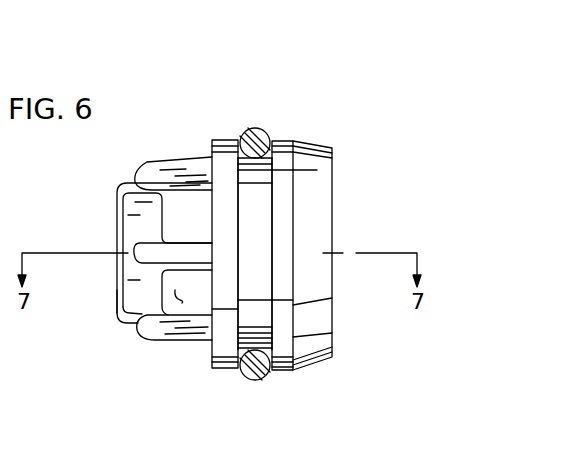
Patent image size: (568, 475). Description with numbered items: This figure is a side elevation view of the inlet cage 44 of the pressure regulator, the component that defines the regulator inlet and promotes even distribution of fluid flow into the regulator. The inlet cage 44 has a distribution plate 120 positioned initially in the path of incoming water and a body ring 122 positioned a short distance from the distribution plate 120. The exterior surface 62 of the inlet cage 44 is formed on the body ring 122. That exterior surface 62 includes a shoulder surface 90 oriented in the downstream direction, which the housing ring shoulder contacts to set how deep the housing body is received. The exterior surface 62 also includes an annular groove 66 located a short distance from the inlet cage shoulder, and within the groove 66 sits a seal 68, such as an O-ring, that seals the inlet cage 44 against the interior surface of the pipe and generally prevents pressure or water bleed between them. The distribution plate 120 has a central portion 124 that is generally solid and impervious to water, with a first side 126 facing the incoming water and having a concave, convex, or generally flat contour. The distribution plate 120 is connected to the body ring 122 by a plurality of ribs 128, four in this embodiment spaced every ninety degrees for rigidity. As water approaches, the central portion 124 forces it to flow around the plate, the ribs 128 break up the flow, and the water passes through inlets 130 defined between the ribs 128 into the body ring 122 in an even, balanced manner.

The inlet cage 44 is at (229, 109).
The exterior surface 62 is at (284, 372).
The annular groove 66 is at (274, 125).
The seal 68 is at (258, 129).
The shoulder surface 90 is at (333, 170).
The distribution plate 120 is at (115, 202).
The body ring 122 is at (259, 397).
The central portion 124 is at (130, 228).
The first side 126 is at (117, 297).
The ribs 128 is at (185, 339).
The inlets 130 is at (178, 299).